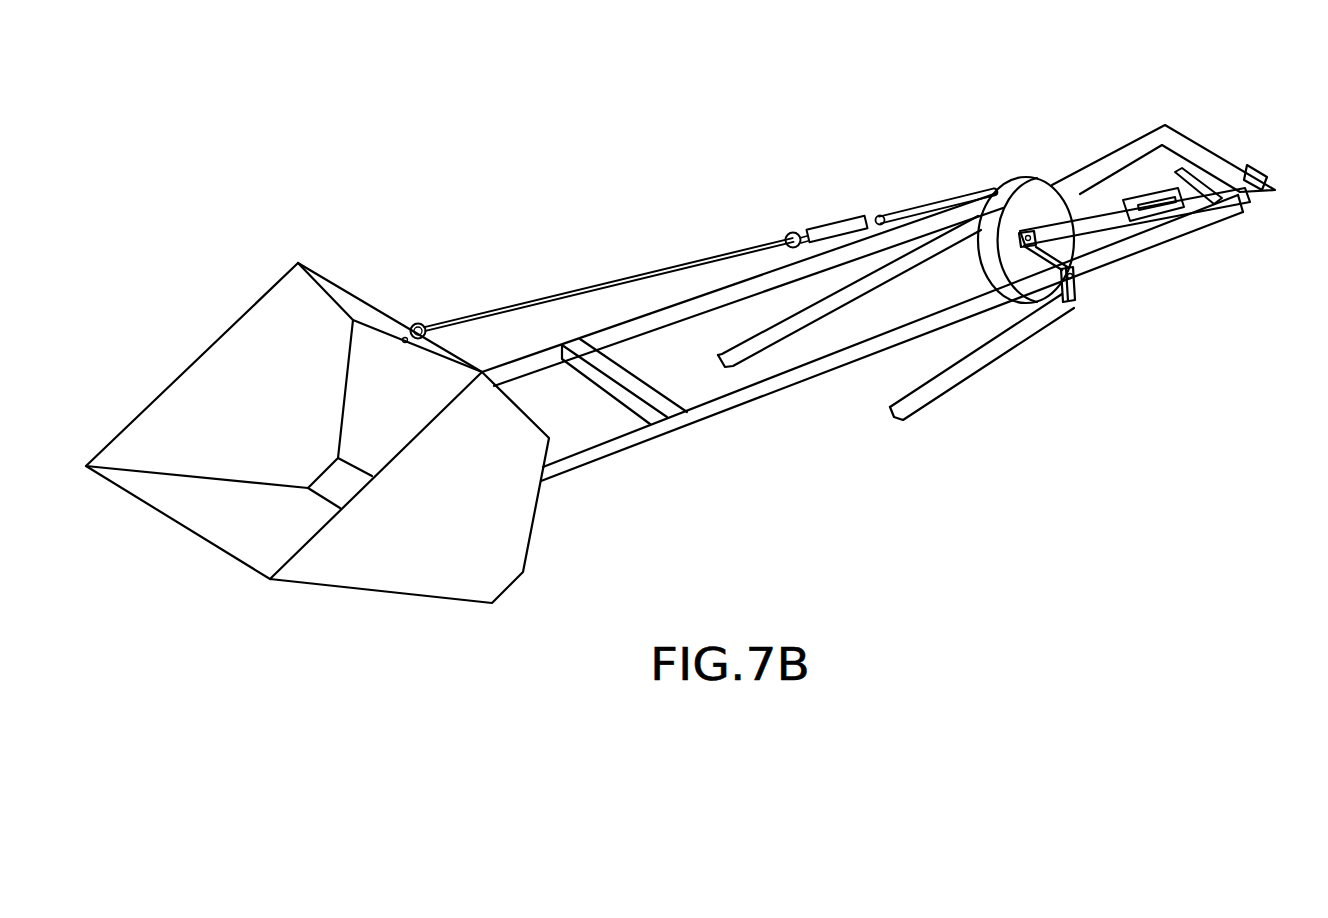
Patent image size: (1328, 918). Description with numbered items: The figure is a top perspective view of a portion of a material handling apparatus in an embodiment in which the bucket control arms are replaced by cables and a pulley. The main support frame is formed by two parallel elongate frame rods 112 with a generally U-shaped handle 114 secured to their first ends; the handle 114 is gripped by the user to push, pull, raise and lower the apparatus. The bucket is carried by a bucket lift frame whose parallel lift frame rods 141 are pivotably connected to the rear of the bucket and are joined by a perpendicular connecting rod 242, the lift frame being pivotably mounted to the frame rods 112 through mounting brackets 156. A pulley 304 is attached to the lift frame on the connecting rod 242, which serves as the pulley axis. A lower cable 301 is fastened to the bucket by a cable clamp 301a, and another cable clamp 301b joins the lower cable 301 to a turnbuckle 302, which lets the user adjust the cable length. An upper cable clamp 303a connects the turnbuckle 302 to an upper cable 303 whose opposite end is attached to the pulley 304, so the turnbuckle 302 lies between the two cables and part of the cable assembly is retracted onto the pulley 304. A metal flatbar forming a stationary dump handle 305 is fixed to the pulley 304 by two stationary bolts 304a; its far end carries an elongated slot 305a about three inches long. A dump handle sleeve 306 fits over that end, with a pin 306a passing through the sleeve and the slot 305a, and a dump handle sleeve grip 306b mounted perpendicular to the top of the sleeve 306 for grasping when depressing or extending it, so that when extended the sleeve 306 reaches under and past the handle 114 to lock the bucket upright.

The frame rods 112 is at (748, 354).
The handle 114 is at (1198, 131).
The lift frame rods 141 is at (842, 362).
The mounting brackets 156 is at (1075, 302).
The connecting rod 242 is at (1022, 256).
The lower cable 301 is at (655, 285).
The cable clamp 301a is at (451, 320).
The cable clamp 301b is at (786, 232).
The turnbuckle 302 is at (838, 213).
The upper cable 303 is at (966, 190).
The upper cable clamp 303a is at (880, 214).
The pulley 304 is at (1032, 205).
The stationary bolt 304a is at (1048, 225).
The stationary dump handle 305 is at (1103, 218).
The elongated slot 305a is at (1150, 206).
The dump handle sleeve 306 is at (1204, 201).
The pin 306a is at (1207, 210).
The dump handle sleeve grip 306b is at (1204, 179).